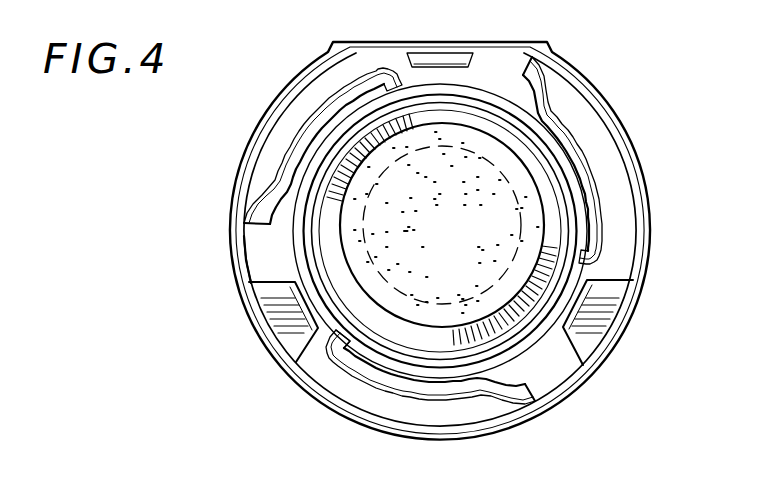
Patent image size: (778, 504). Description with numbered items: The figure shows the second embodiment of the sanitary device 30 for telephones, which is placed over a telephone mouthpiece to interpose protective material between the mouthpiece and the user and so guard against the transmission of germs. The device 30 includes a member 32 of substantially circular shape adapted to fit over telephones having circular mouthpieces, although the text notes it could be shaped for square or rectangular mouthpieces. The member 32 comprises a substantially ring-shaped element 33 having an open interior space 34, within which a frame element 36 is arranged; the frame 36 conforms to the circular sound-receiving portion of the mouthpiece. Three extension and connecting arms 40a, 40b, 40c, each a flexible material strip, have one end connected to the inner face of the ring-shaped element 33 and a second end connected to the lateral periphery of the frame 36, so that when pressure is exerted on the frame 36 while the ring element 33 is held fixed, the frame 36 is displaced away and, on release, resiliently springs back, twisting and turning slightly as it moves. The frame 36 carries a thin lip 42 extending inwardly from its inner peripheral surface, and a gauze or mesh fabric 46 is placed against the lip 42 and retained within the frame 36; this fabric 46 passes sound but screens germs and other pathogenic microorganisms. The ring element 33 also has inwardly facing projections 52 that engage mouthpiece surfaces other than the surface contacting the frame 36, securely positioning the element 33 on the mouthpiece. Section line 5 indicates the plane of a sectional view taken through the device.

The sanitary device 30 is at (636, 96).
The member 32 is at (634, 142).
The ring-shaped element 33 is at (640, 190).
The open interior space 34 is at (279, 270).
The frame element 36 is at (493, 88).
The extension and connecting arm 40a is at (303, 125).
The extension and connecting arm 40b is at (606, 240).
The extension and connecting arm 40c is at (490, 386).
The thin lip 42 is at (348, 362).
The gauze or mesh fabric 46 is at (476, 234).
The inwardly facing projections 52 is at (424, 56).
The section line 5- 5 is at (200, 226).